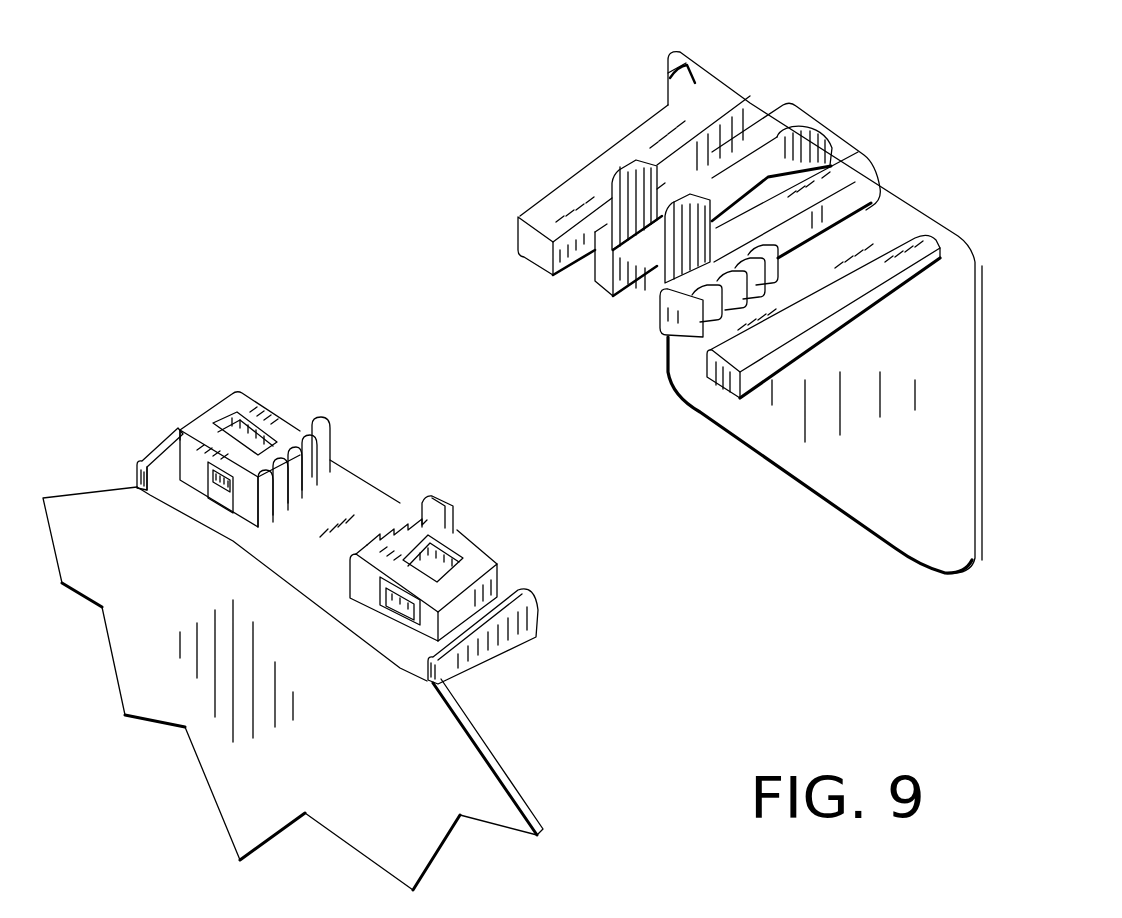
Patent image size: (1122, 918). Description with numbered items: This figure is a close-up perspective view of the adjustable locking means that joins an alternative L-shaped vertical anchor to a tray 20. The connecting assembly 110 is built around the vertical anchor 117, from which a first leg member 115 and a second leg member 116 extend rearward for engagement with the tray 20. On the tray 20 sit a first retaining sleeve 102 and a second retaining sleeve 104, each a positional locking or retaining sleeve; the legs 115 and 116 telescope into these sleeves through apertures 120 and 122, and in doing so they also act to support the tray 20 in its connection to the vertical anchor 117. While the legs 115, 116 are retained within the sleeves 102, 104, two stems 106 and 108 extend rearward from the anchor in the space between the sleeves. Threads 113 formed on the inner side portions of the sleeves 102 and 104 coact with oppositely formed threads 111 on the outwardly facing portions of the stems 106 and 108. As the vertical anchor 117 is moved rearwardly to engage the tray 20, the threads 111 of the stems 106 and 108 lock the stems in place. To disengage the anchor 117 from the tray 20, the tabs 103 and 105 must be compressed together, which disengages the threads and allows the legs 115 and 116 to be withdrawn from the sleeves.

The tray 20 is at (493, 790).
The first retaining sleeve 102 is at (236, 396).
The tab 103 is at (611, 180).
The second retaining sleeve 104 is at (490, 565).
The tab 105 is at (664, 285).
The stem 106 is at (664, 329).
The stem 108 is at (596, 281).
The connecting assembly 110 is at (616, 88).
The threads 111 is at (822, 238).
The threads 113 is at (413, 513).
The first leg member 115 is at (728, 378).
The second leg member 116 is at (520, 242).
The vertical anchor 117 is at (960, 410).
The aperture 120 is at (207, 487).
The aperture 122 is at (390, 598).